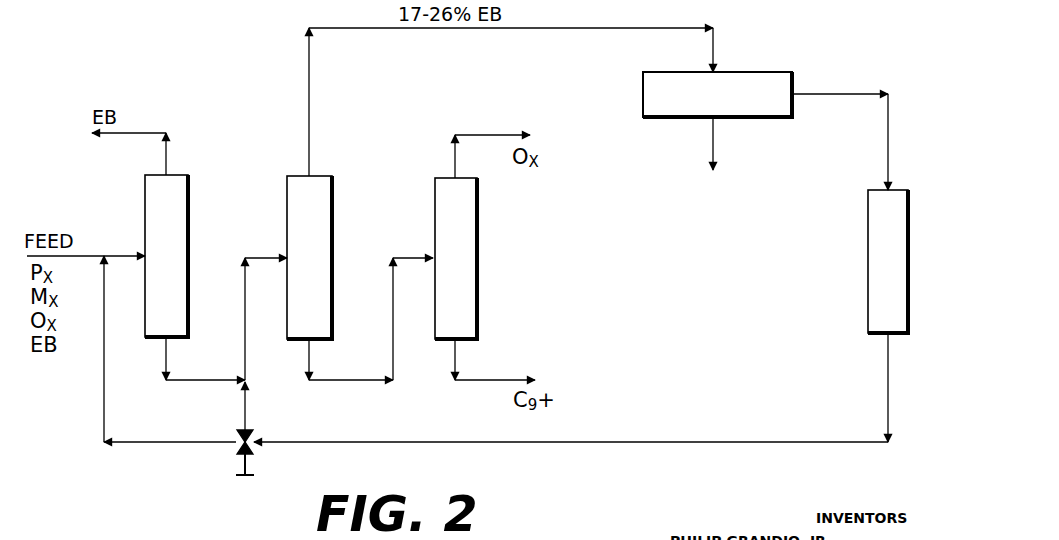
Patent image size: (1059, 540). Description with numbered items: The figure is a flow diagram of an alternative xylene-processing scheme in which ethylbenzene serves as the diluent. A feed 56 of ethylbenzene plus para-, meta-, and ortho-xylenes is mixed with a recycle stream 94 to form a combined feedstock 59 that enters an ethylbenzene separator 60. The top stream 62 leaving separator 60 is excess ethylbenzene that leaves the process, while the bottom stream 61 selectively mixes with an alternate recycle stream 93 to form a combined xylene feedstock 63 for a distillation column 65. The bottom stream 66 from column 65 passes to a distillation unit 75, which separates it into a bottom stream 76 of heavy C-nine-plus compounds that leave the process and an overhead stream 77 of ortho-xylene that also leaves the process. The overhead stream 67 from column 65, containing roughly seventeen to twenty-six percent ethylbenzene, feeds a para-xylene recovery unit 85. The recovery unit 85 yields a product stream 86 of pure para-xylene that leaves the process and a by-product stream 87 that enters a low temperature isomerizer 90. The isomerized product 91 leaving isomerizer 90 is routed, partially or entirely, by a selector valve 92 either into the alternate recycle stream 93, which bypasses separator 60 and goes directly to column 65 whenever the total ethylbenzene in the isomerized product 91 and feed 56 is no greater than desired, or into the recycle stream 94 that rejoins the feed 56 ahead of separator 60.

The feed 56 is at (97, 256).
The combined feedstock 59 is at (126, 256).
The ethylbenzene separator 60 is at (188, 210).
The bottom stream 61 is at (188, 380).
The top stream 62 is at (166, 152).
The combined xylene feedstock 63 is at (245, 314).
The distillation column 65 is at (332, 204).
The bottom stream 66 is at (362, 380).
The overhead stream 67 is at (309, 84).
The distillation unit 75 is at (477, 212).
The bottom stream 76 is at (478, 380).
The overhead stream 77 is at (492, 134).
The para-Xylene recovery unit 85 is at (654, 118).
The product stream 86 is at (713, 134).
The by-product stream 87 is at (877, 94).
The low temperature isomerizer 90 is at (868, 258).
The isomerized product 91 is at (707, 440).
The selector valve 92 is at (250, 450).
The alternate recycle stream 93 is at (245, 406).
The recycle stream 94 is at (161, 442).